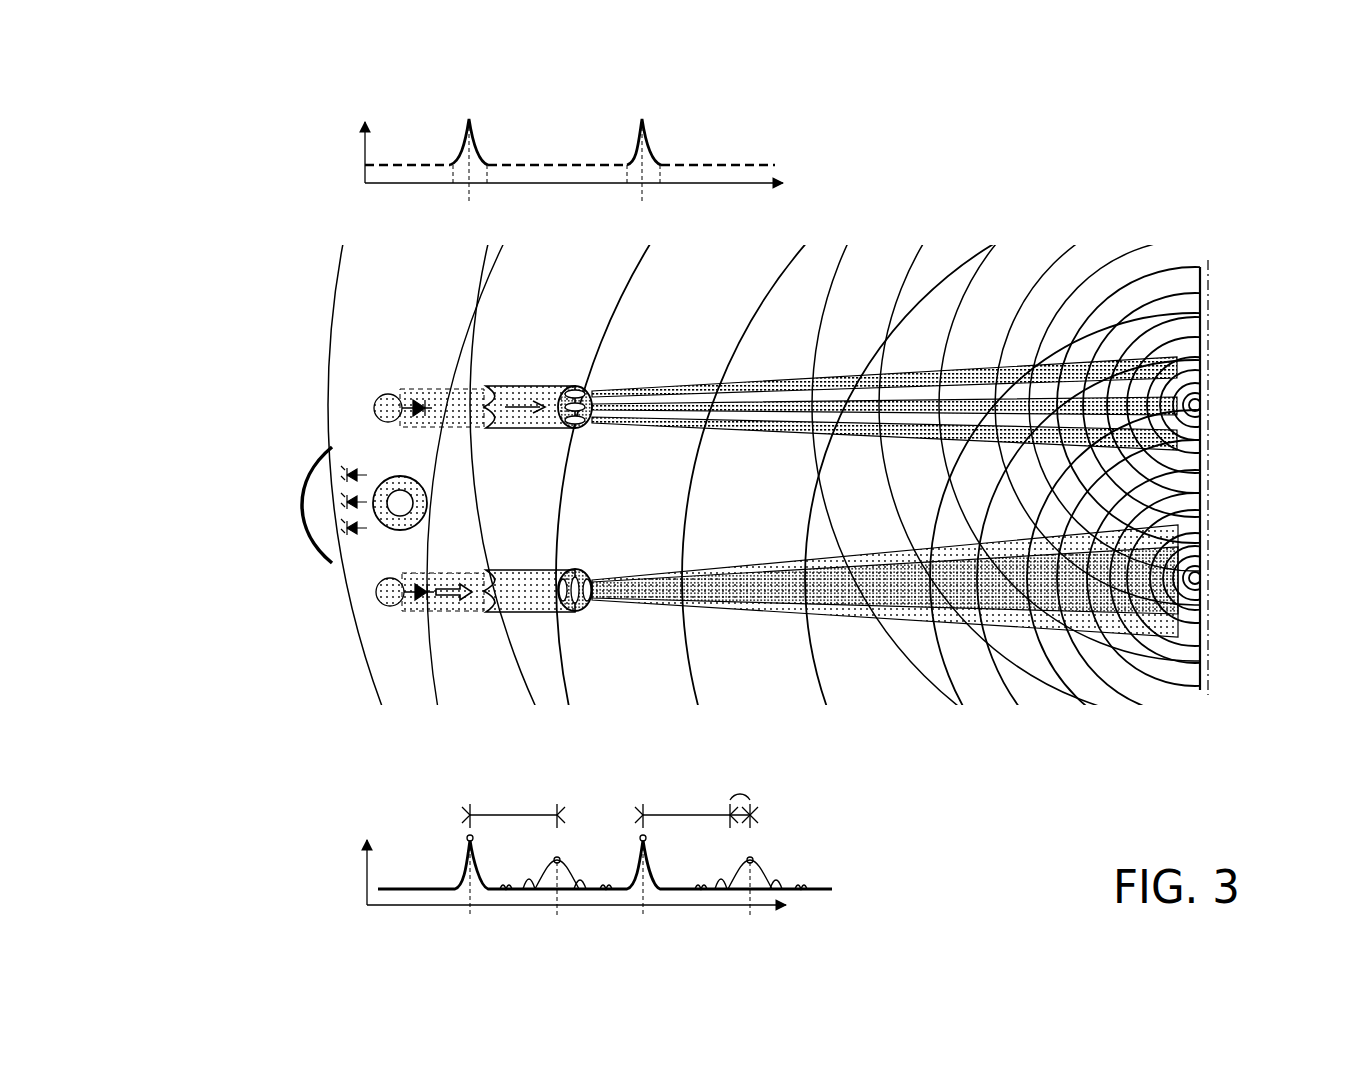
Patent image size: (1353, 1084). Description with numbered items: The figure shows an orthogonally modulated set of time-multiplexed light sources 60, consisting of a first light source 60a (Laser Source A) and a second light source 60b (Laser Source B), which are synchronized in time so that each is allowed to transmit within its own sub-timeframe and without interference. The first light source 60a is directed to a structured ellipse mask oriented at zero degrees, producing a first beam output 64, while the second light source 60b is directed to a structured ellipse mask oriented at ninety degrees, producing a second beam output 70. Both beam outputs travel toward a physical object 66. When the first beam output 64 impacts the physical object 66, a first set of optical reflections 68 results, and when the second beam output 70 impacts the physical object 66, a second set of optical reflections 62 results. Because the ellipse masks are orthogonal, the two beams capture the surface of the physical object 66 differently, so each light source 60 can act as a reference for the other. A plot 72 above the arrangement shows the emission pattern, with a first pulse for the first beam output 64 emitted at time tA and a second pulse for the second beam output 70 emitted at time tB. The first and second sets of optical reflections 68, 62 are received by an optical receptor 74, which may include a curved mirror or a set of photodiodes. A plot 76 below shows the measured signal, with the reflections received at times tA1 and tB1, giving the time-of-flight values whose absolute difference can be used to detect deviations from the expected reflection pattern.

The light sources 60 is at (398, 372).
The first light source 60a is at (374, 408).
The second light source 60b is at (375, 592).
The second set of optical reflections 62 is at (905, 290).
The first beam output 64 is at (678, 372).
The physical object 66 is at (1200, 300).
The first set of optical reflections 68 is at (948, 692).
The second beam output 70 is at (634, 558).
The plot 72 is at (812, 132).
The optical receptor 74 is at (288, 494).
The plot 76 is at (855, 863).